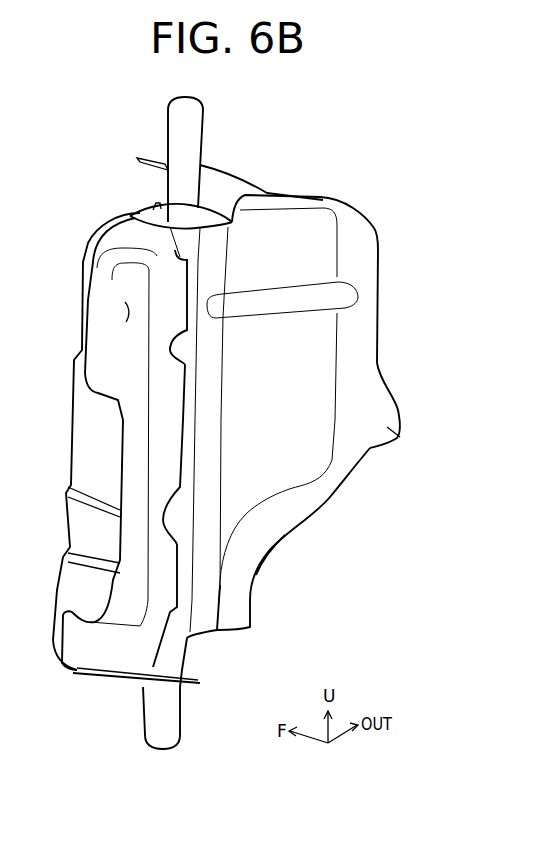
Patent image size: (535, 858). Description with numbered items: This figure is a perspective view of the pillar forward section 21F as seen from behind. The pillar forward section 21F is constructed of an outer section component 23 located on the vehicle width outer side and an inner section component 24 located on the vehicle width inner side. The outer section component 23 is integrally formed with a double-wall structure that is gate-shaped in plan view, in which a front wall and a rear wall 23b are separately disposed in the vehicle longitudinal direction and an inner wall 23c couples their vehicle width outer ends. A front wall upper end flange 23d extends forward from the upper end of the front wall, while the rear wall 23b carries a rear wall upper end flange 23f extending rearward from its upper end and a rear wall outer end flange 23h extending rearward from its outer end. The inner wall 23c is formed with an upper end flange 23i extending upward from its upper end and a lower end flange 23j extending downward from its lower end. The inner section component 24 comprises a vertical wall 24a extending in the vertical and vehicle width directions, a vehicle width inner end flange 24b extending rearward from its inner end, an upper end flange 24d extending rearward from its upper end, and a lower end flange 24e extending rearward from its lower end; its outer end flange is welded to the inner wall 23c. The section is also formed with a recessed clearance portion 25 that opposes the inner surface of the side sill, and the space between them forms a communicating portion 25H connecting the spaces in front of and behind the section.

The pillar forward section 21F is at (330, 127).
The outer section component 23 is at (340, 563).
The rear wall 23b is at (267, 443).
The inner wall 23c is at (197, 410).
The front wall upper end flange 23d is at (210, 168).
The rear wall upper end flange 23f is at (333, 197).
The rear wall outer end flange 23h is at (398, 439).
The upper end flange 23i is at (200, 128).
The lower end flange 23j is at (185, 695).
The inner section component 24 is at (60, 668).
The vertical wall 24a is at (127, 322).
The vehicle width inner end flange 24b is at (108, 436).
The upper end flange 24d is at (200, 252).
The lower end flange 24e is at (128, 683).
The clearance portion 25 is at (267, 555).
The communicating portion 25H is at (348, 641).